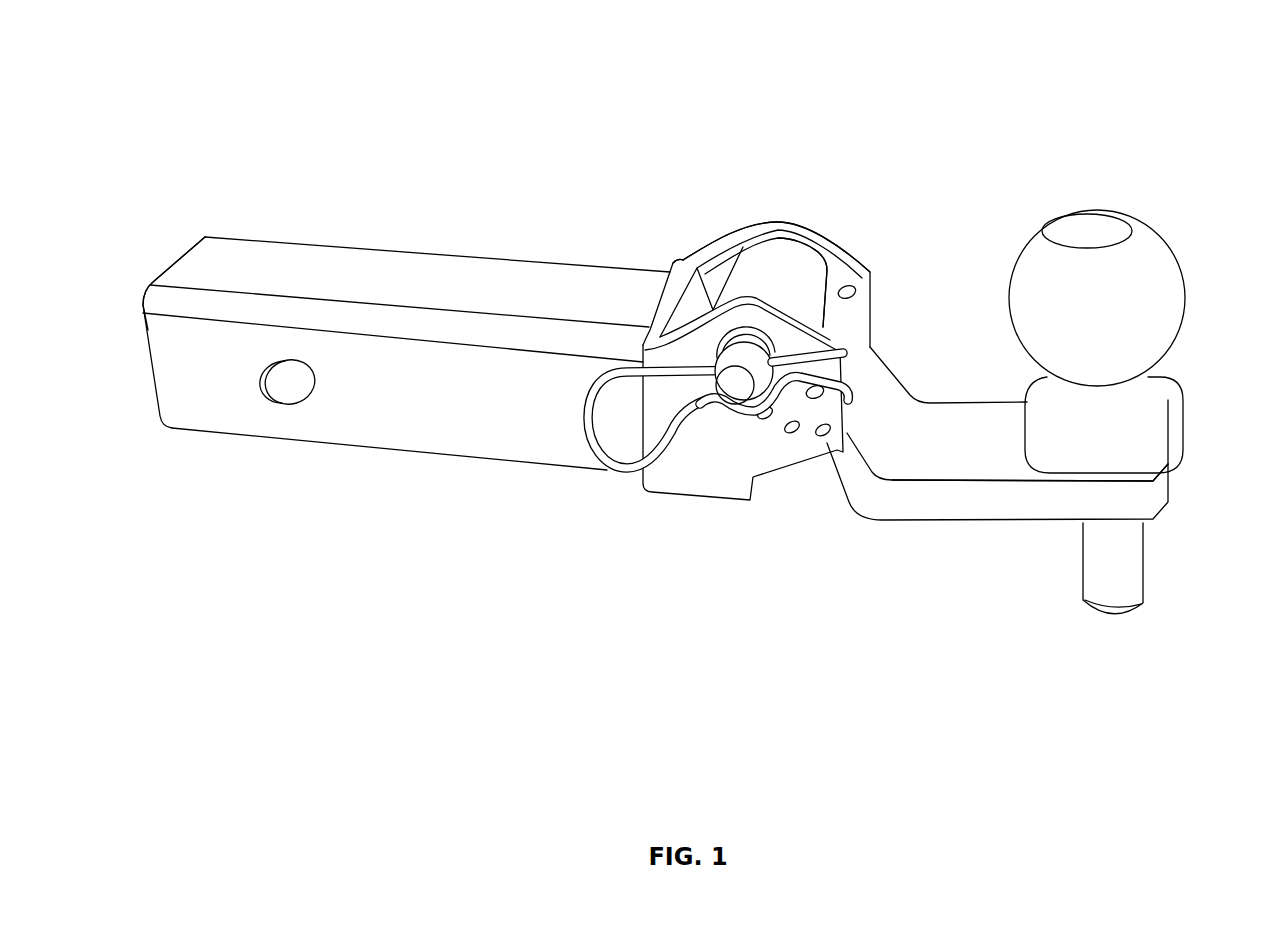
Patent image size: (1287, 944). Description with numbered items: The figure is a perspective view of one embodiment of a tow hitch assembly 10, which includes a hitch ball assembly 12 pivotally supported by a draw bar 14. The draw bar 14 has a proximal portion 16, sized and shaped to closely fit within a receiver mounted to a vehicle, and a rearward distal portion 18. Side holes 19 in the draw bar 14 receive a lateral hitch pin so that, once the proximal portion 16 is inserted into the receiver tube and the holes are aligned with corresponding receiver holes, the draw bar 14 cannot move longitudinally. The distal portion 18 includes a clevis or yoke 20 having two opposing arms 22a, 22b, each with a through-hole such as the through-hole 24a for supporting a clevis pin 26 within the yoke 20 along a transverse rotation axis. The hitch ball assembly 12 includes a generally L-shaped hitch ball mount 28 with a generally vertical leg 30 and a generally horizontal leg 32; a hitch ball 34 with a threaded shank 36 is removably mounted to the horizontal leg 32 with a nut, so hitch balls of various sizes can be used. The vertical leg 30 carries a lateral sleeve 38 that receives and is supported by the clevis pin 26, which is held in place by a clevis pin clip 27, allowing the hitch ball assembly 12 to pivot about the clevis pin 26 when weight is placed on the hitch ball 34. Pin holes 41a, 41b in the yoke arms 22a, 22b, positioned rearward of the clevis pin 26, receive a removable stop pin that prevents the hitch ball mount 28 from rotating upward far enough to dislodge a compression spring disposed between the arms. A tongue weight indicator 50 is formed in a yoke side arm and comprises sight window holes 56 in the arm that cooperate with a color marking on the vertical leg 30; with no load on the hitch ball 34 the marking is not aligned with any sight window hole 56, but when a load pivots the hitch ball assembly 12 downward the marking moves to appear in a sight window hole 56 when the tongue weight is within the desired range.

The tow hitch assembly 10 is at (463, 196).
The hitch ball assembly 12 is at (1043, 399).
The draw bar 14 is at (332, 277).
The proximal portion 16 is at (220, 257).
The distal portion 18 is at (678, 266).
The side holes 19 is at (287, 382).
The clevis or yoke 20 is at (695, 238).
The yoke arm 22a is at (685, 458).
The yoke arm 22b is at (838, 248).
The through-hole 24a is at (742, 330).
The clevis pin 26 is at (735, 390).
The clevis pin clip 27 is at (613, 455).
The hitch ball mount 28 is at (982, 505).
The vertical leg 30 is at (840, 333).
The horizontal leg 32 is at (1112, 502).
The hitch ball 34 is at (1097, 218).
The threaded shank 36 is at (1115, 567).
The lateral sleeve 38 is at (778, 250).
The pin hole 41a is at (822, 390).
The pin hole 41b is at (855, 288).
The tongue weight indicator 50 is at (849, 453).
The sight window holes 56 is at (767, 418).